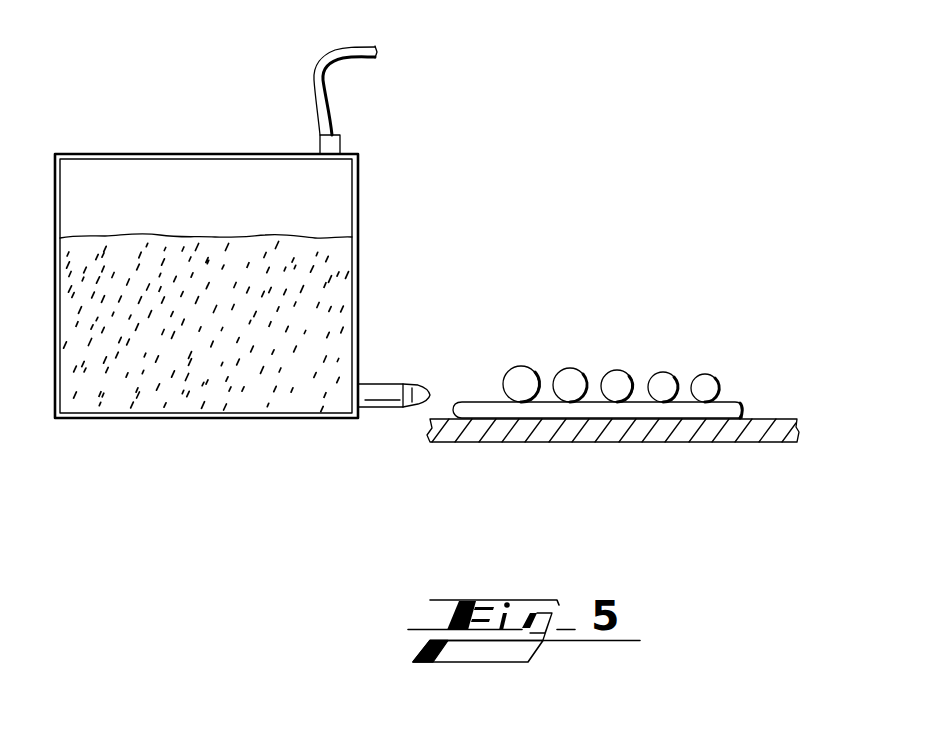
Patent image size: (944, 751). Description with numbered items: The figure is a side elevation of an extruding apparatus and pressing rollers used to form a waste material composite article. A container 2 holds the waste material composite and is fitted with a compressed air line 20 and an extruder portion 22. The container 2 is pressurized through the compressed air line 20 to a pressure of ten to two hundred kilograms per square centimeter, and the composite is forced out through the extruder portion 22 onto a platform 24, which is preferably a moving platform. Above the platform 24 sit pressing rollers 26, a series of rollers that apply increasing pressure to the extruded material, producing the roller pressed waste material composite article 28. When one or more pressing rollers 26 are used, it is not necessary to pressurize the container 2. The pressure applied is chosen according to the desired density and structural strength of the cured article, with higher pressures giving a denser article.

The container 2 is at (358, 187).
The compressed air line 20 is at (313, 72).
The extruder portion 22 is at (391, 384).
The platform 24 is at (585, 436).
The pressing rollers 26 is at (519, 373).
The roller pressed waste material composite article 28 is at (730, 402).